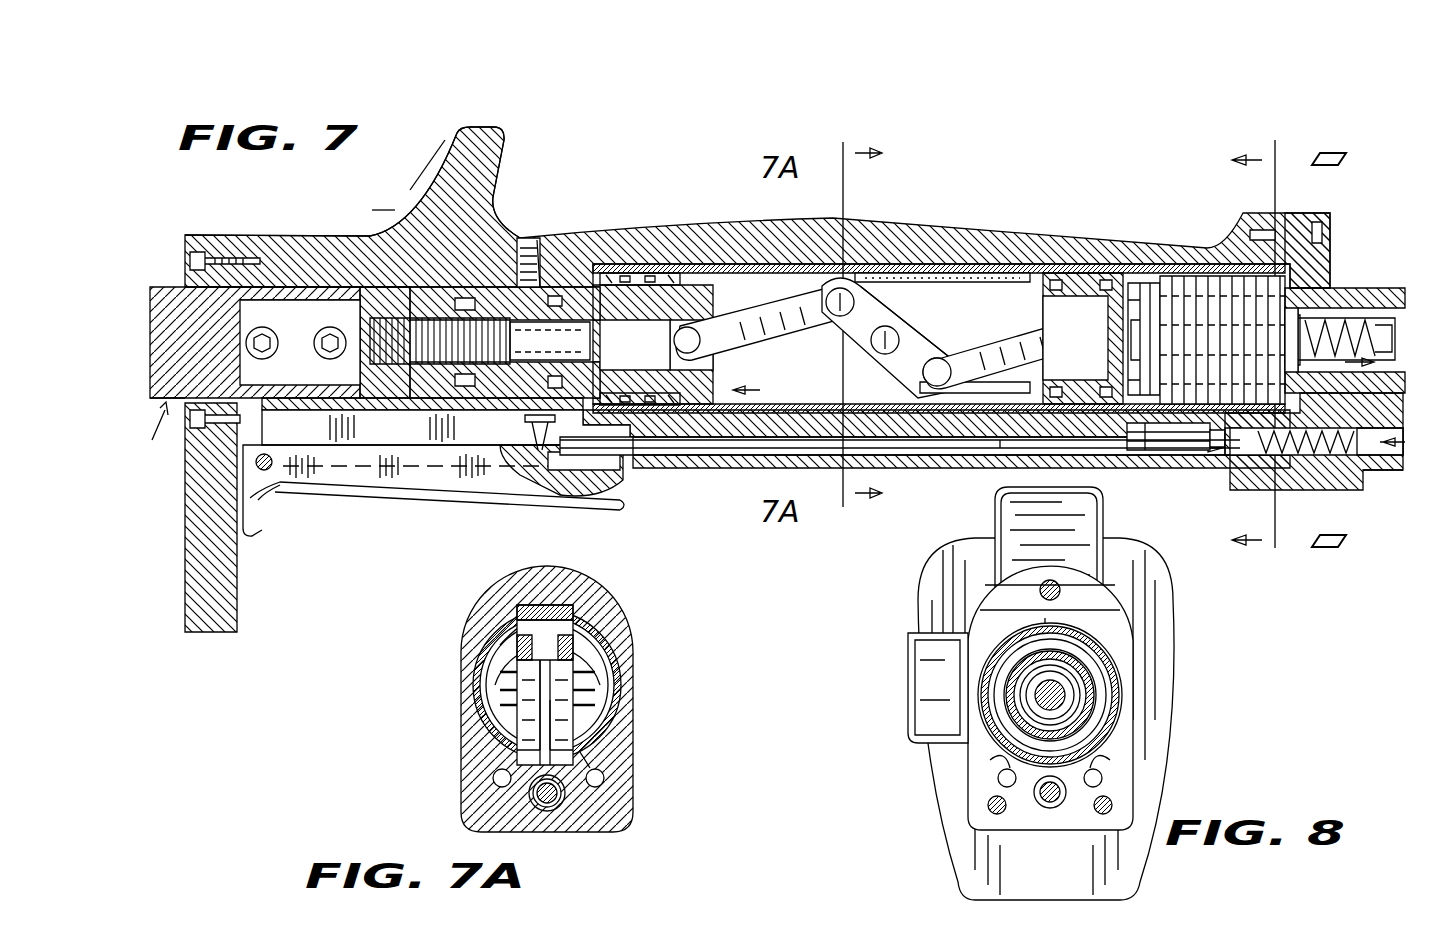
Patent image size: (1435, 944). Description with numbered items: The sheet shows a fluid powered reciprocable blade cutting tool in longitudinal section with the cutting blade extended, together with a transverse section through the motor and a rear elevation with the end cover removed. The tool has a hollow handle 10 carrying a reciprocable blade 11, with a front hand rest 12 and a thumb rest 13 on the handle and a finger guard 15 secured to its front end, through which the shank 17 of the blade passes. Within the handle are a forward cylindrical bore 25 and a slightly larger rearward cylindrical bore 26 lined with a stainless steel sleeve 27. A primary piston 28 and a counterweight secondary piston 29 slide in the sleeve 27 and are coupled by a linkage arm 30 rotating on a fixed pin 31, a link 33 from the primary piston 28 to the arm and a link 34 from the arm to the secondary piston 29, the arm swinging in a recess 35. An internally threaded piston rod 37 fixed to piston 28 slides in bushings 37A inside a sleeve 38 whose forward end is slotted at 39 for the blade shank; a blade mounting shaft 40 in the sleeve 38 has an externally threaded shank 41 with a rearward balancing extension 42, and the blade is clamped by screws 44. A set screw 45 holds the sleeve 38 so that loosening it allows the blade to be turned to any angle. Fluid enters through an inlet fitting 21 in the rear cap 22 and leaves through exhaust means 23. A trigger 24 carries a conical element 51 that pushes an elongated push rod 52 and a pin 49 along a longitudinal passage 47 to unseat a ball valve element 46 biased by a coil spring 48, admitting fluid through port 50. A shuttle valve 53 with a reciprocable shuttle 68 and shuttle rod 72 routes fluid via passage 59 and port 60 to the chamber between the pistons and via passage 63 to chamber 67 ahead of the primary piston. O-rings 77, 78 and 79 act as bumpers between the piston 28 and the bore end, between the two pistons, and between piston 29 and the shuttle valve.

In FIG. 7, the hollow handle 10 is at (1010, 220).
In FIG. 7A, the hollow handle 10 is at (650, 621).
In FIG. 8, the hollow handle 10 is at (1146, 610).
In FIG. 7, the reciprocable blade 11 is at (160, 435).
In FIG. 7, the front hand rest 12 is at (470, 128).
In FIG. 8, the front hand rest 12 is at (1000, 513).
In FIG. 8, the thumb rest 13 is at (905, 645).
In FIG. 7, the finger guard 15 is at (208, 632).
In FIG. 8, the finger guard 15 is at (1165, 665).
In FIG. 7, the shank 17 is at (200, 328).
In FIG. 7, the inlet fitting 21 is at (1370, 490).
In FIG. 7, the rear cover or cap 22 is at (1320, 212).
In FIG. 7, the exhaust means 23 is at (1362, 290).
In FIG. 7, the trigger 24 is at (470, 507).
In FIG. 7, the forward cylindrical bore 25 is at (285, 287).
In FIG. 7, the rearward cylindrical bore 26 is at (678, 266).
In FIG. 7A, the rearward cylindrical bore 26 is at (478, 655).
In FIG. 8, the rearward cylindrical bore 26 is at (1008, 648).
In FIG. 7, the sleeve 27 is at (708, 266).
In FIG. 7A, the sleeve 27 is at (485, 725).
In FIG. 8, the sleeve 27 is at (1105, 658).
In FIG. 7, the primary piston 28 is at (745, 290).
In FIG. 7, the secondary piston 29 is at (1085, 270).
In FIG. 7, the linkage arm 30 is at (900, 300).
In FIG. 7A, the linkage arm 30 is at (583, 630).
In FIG. 7, the transverse horizontal shaft or pin 31 is at (895, 320).
In FIG. 7A, the transverse horizontal shaft or pin 31 is at (575, 720).
In FIG. 7, the link 33 is at (795, 296).
In FIG. 7A, the link 33 is at (560, 680).
In FIG. 7, the link 34 is at (1012, 347).
In FIG. 7A, the link 34 is at (560, 720).
In FIG. 7, the recess 35 is at (865, 266).
In FIG. 7A, the recess 35 is at (535, 615).
In FIG. 7, the piston rod 37 is at (390, 280).
In FIG. 7, the bushings 37A is at (522, 262).
In FIG. 7, the sleeve 38 is at (415, 190).
In FIG. 7, the slot 39 is at (358, 296).
In FIG. 7, the blade mounting shaft 40 is at (306, 398).
In FIG. 7, the externally threaded shank 41 is at (400, 330).
In FIG. 7, the rearward extension 42 is at (505, 364).
In FIG. 7, the screws 44 is at (322, 338).
In FIG. 7, the set screw 45 is at (540, 245).
In FIG. 7, the ball valve element 46 is at (1248, 455).
In FIG. 7A, the ball valve element 46 is at (562, 806).
In FIG. 8, the ball valve element 46 is at (1057, 808).
In FIG. 7, the longitudinal passage 47 is at (1218, 448).
In FIG. 7A, the longitudinal passage 47 is at (552, 807).
In FIG. 8, the longitudinal passage 47 is at (1045, 803).
In FIG. 7, the coil spring 48 is at (1295, 470).
In FIG. 7, the pin 49 is at (1188, 452).
In FIG. 7, the port 50 is at (1232, 455).
In FIG. 7, the conical element 51 is at (548, 495).
In FIG. 7, the push rod 52 is at (780, 450).
In FIG. 7, the shuttle valve 53 is at (1195, 270).
In FIG. 8, the shuttle valve 53 is at (1117, 727).
In FIG. 7A, the longitudinal passage 59 is at (605, 782).
In FIG. 8, the longitudinal passage 59 is at (997, 782).
In FIG. 7A, the port 60 is at (605, 760).
In FIG. 7A, the longitudinal passage 63 is at (492, 778).
In FIG. 8, the longitudinal passage 63 is at (1103, 780).
In FIG. 7, the chamber 67 is at (614, 278).
In FIG. 8, the shuttle 68 is at (1065, 697).
In FIG. 8, the shuttle rod 72 is at (1035, 697).
In FIG. 7, the O-ring 77 is at (601, 312).
In FIG. 7, the O-ring 78 is at (678, 455).
In FIG. 7, the O-ring 79 is at (1148, 272).